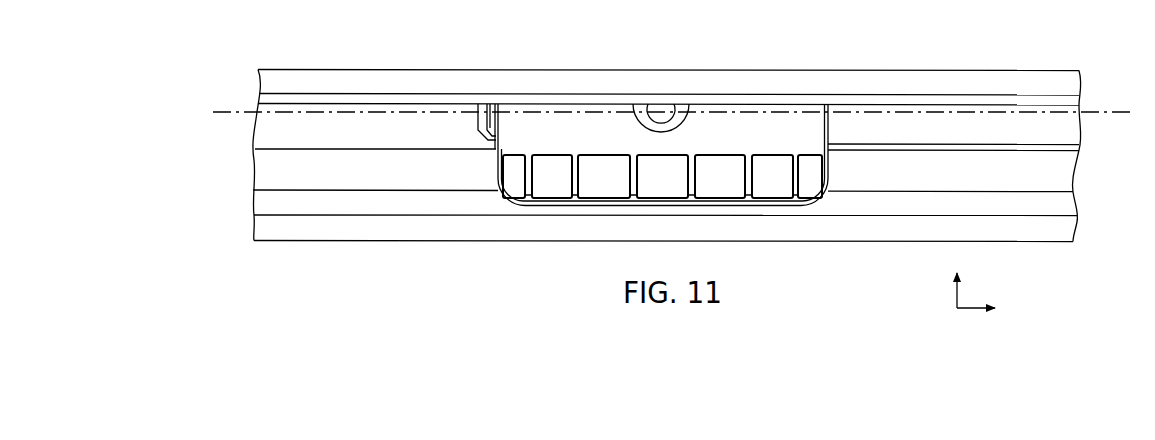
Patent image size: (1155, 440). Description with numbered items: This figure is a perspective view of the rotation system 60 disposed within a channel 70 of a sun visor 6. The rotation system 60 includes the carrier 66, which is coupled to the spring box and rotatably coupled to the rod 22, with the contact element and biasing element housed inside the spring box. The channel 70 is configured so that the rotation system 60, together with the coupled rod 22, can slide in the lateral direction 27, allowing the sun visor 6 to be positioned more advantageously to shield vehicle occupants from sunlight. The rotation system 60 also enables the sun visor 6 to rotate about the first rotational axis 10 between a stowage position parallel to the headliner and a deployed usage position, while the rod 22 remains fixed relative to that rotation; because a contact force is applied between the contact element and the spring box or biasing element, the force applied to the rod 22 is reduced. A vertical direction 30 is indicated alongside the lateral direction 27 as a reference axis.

The sun visor 6 is at (374, 227).
The first rotational axis 10 is at (1111, 113).
The rod 22 is at (866, 105).
The lateral direction 27 is at (972, 308).
The vertical direction 30 is at (953, 290).
The rotation system 60 is at (658, 193).
The carrier 66 is at (772, 183).
The channel 70 is at (447, 191).